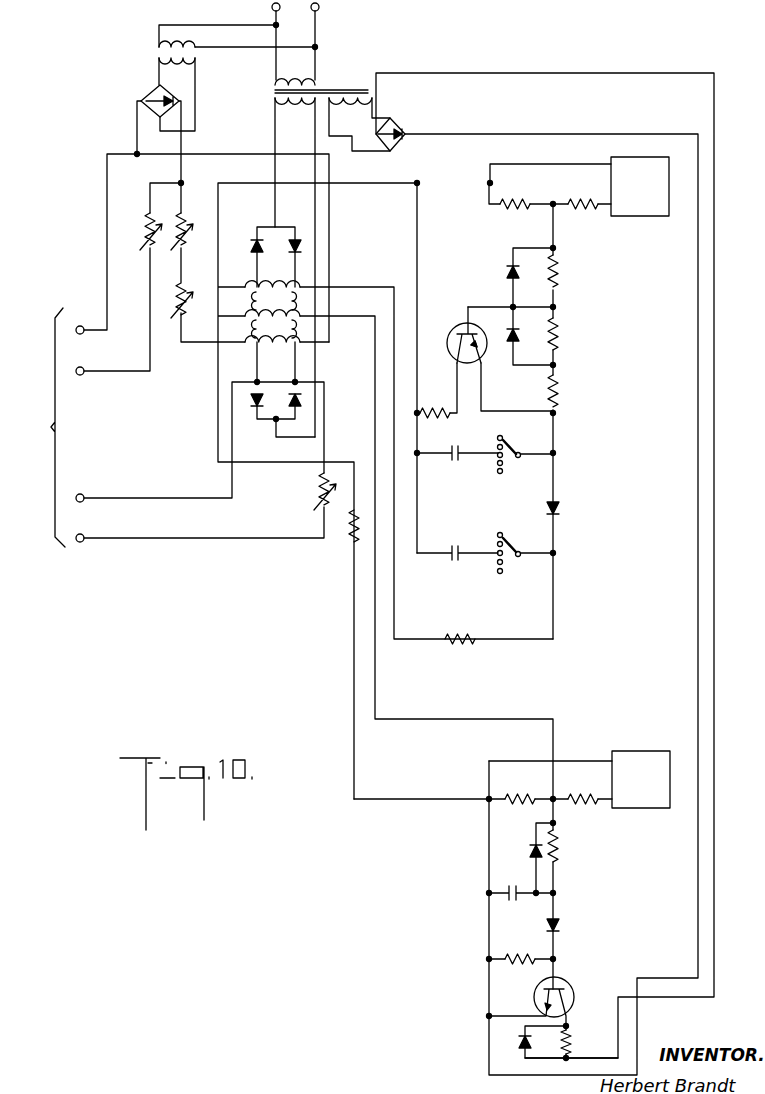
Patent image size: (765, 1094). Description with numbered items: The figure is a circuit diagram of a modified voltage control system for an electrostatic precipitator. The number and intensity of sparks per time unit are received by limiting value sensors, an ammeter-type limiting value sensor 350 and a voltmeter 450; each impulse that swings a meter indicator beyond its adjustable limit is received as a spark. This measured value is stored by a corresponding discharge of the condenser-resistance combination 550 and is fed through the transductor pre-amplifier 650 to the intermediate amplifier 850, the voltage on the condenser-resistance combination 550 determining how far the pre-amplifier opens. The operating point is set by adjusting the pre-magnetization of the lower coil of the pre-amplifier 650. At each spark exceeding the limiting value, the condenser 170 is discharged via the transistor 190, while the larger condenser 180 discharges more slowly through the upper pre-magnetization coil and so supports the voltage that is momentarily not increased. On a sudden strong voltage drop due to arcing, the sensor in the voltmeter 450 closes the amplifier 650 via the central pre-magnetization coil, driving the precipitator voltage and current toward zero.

The condenser 170 is at (452, 462).
The condenser 180 is at (452, 562).
The transistor 190 is at (455, 330).
The limiting value sensor 350 is at (648, 216).
The voltmeter 450 is at (653, 808).
The condenser-resistance combination 550 is at (556, 455).
The transductor pre-amplifier 650 is at (244, 302).
The intermediate amplifier 850 is at (51, 427).